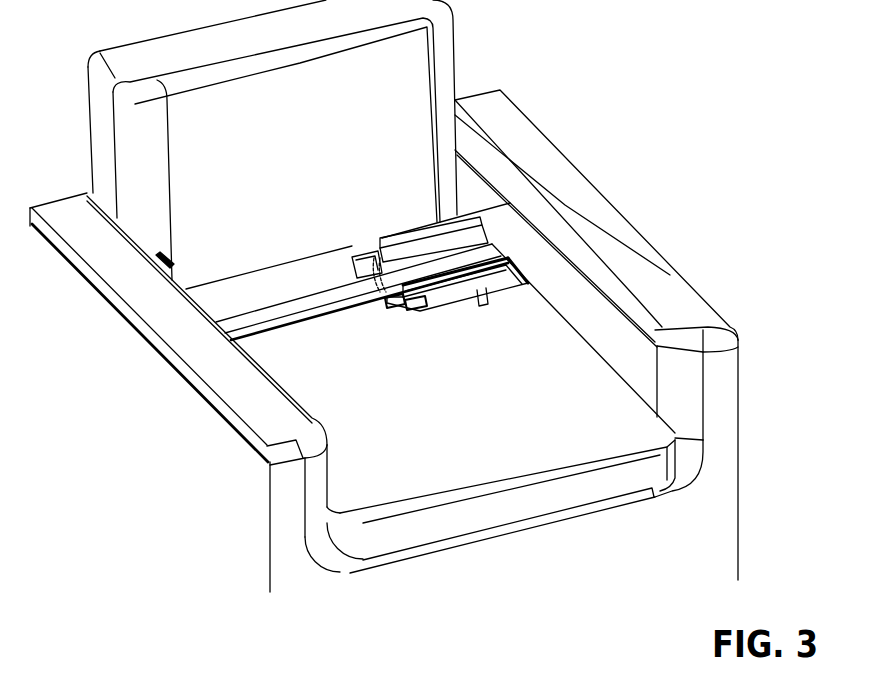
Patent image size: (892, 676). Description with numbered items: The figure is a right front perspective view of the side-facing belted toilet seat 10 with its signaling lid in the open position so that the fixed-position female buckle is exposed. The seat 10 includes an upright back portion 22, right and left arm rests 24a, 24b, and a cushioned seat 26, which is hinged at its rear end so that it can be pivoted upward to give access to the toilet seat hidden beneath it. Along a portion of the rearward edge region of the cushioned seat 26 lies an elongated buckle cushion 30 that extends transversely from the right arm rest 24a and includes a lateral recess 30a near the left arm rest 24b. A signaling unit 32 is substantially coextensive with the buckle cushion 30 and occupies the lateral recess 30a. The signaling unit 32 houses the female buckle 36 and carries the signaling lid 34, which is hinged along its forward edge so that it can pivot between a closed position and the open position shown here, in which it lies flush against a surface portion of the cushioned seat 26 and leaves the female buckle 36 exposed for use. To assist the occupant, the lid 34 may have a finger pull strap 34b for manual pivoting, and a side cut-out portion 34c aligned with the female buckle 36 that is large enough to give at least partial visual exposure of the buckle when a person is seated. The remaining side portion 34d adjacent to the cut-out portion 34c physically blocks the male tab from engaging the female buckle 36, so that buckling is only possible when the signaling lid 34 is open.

The side-facing belted toilet seat 10 is at (149, 462).
The upright back portion 22 is at (255, 157).
The right arm rest 24a is at (203, 350).
The left arm rest 24b is at (527, 153).
The cushioned seat 26 is at (395, 481).
The elongated buckle cushion 30 is at (280, 295).
The lateral recess 30a is at (352, 256).
The signaling unit 32 is at (428, 242).
The signaling lid 34 is at (472, 305).
The finger pull strap 34b is at (488, 302).
The side cut-out portion 34c is at (413, 312).
The remaining side portion 34d is at (392, 304).
The female buckle 36 is at (375, 262).